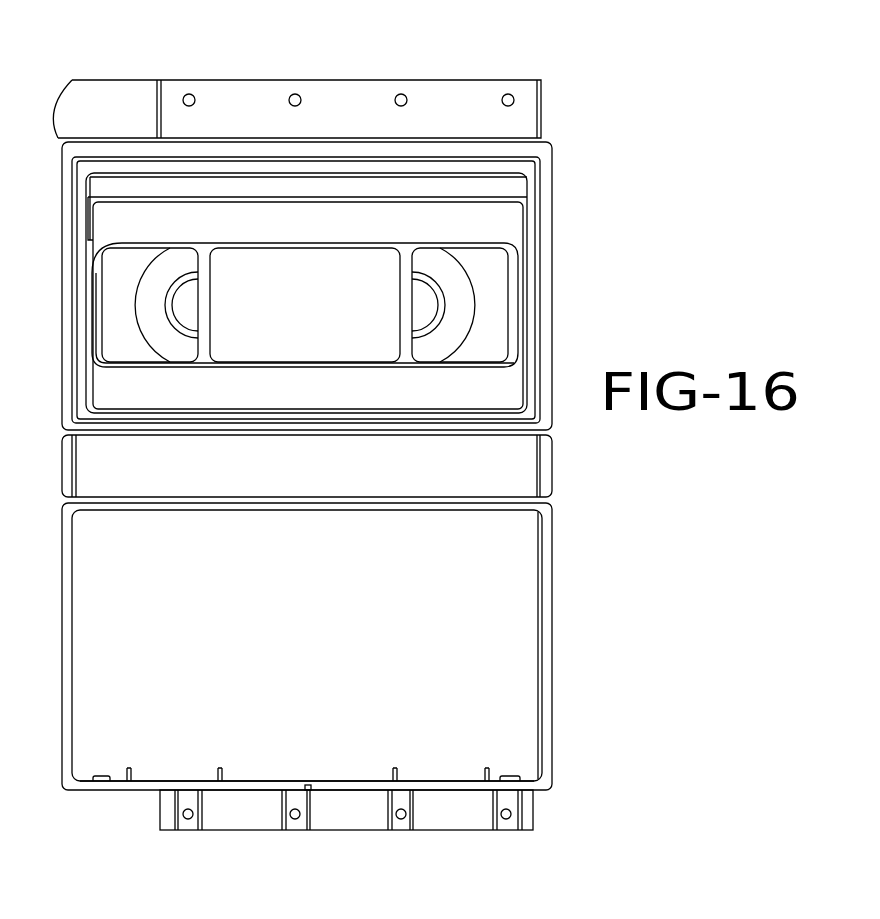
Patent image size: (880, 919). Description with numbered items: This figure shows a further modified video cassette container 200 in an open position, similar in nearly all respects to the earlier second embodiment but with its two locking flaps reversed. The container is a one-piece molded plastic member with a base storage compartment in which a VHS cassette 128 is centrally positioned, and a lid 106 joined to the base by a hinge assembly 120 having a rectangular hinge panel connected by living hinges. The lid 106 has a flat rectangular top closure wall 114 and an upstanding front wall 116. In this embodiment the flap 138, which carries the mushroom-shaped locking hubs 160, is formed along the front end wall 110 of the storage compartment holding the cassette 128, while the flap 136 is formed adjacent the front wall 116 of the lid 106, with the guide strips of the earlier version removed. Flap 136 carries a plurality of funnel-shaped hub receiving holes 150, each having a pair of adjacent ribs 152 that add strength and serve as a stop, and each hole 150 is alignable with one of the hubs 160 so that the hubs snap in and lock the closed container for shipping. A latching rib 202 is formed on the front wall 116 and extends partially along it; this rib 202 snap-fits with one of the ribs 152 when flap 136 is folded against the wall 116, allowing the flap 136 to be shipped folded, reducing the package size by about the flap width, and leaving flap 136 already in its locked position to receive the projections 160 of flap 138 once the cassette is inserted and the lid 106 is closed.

The flap 138 is at (489, 76).
The locking hubs 160 is at (401, 94).
The further modified container 200 is at (598, 230).
The front end wall 110 is at (245, 157).
The VHS tape 128 is at (305, 305).
The hinge assembly 120 is at (556, 469).
The lid 106 is at (556, 651).
The top closure wall 114 is at (481, 597).
The front wall 116 is at (456, 781).
The latching rib 202 is at (308, 785).
The flap 136 is at (462, 833).
The ribs 152 is at (276, 829).
The hub receiving holes 150 is at (402, 819).